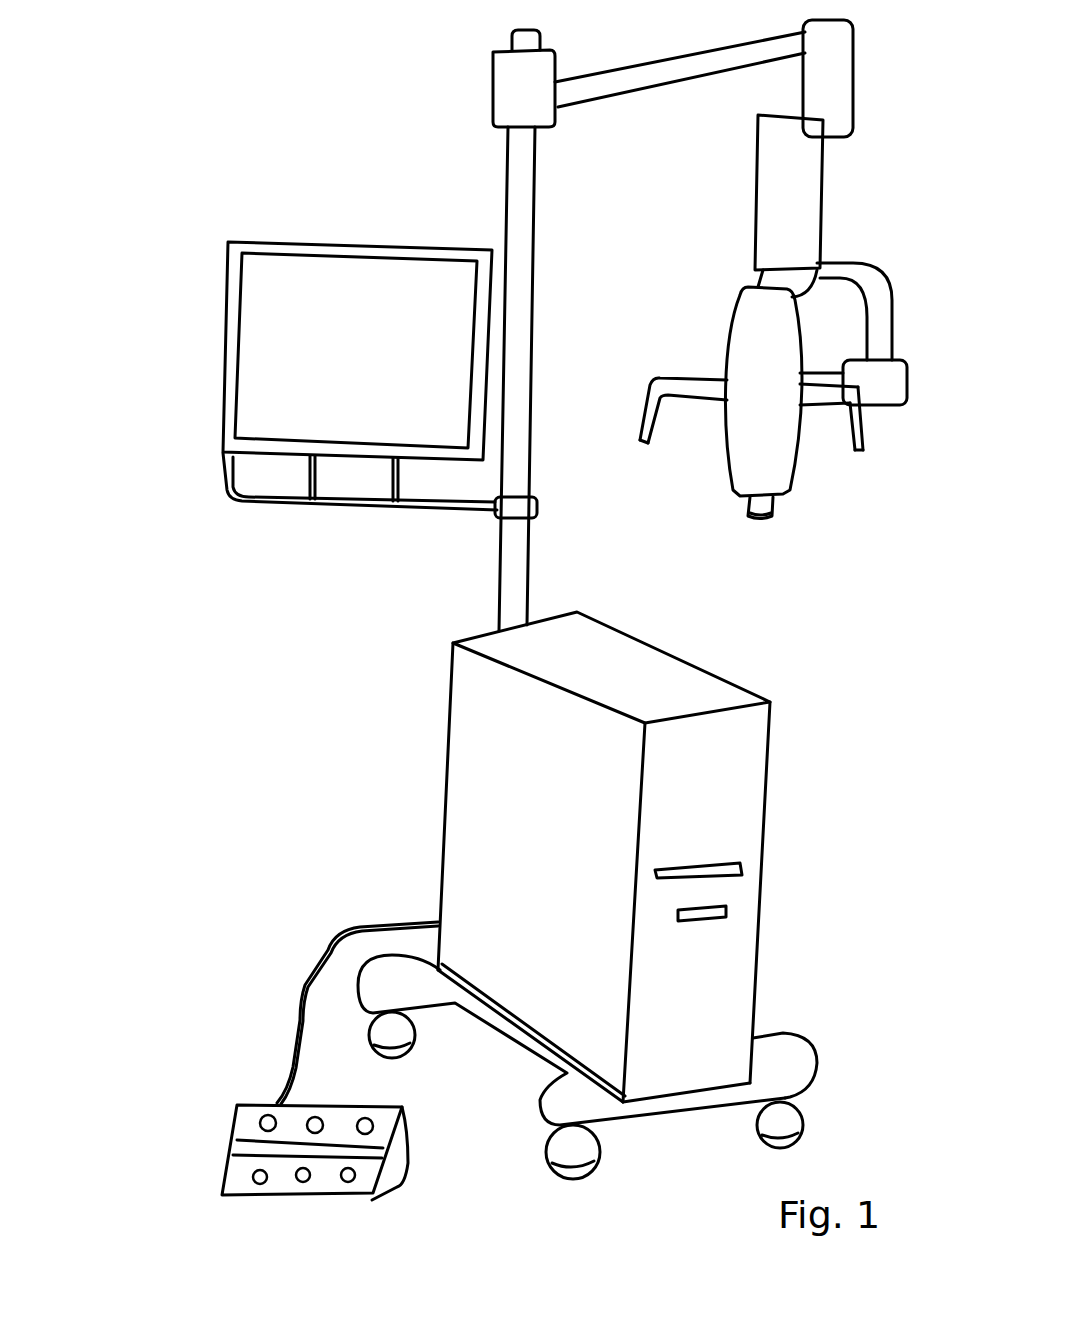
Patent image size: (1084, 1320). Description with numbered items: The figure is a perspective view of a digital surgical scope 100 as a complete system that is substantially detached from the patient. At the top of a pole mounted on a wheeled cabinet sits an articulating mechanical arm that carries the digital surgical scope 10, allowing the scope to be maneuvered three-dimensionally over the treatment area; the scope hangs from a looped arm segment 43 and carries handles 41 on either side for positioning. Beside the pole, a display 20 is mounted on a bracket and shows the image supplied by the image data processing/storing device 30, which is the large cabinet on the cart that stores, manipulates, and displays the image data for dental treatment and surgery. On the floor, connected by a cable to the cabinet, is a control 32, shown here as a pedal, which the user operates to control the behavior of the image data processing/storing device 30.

The digital surgical scope 100 is at (115, 35).
The digital surgical scope 10 is at (787, 485).
The display 20 is at (223, 353).
The image data processing/storing device 30 is at (775, 777).
The control 32 is at (367, 1200).
The handlebar 41 is at (865, 433).
The support arm loop 43 is at (873, 272).